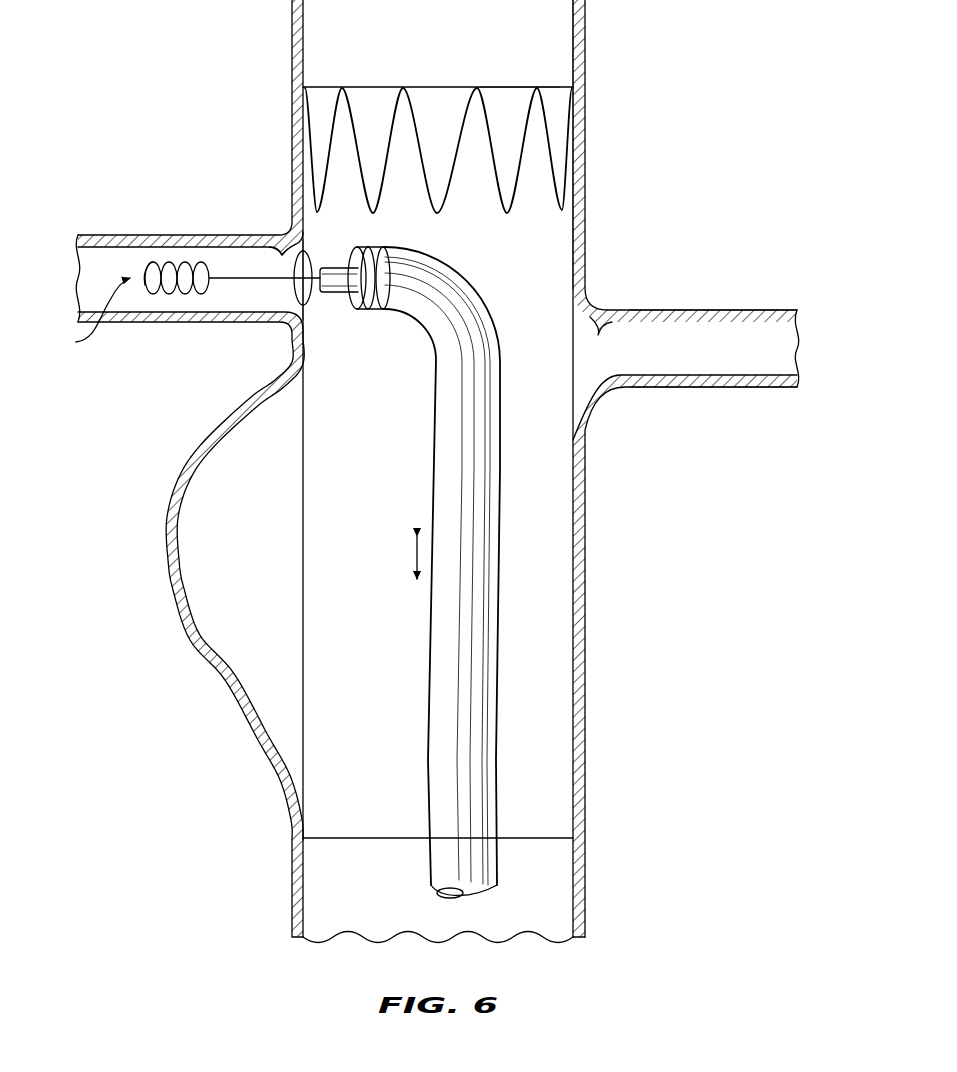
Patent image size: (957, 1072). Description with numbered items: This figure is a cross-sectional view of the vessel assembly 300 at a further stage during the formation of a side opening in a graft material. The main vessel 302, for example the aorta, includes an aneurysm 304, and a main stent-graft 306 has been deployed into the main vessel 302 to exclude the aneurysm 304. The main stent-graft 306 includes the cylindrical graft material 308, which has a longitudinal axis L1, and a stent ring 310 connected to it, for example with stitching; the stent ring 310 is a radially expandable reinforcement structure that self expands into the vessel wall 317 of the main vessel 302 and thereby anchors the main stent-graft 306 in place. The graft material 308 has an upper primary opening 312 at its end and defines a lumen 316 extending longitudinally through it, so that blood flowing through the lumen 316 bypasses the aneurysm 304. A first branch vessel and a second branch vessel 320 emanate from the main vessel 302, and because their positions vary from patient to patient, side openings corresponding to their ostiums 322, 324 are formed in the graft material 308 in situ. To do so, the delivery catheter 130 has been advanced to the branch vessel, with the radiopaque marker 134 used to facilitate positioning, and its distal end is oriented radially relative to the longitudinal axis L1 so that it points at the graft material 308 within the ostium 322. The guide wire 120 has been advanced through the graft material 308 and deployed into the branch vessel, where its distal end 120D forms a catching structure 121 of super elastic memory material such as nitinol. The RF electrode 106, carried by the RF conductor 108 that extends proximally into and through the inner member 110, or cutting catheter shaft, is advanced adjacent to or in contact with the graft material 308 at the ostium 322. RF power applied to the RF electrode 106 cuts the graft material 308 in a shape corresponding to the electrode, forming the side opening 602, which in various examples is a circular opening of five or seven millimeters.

The vessel assembly 300 is at (743, 136).
The main vessel 302 is at (410, 66).
The aneurysm 304 is at (210, 559).
The main stent-graft 306 is at (280, 469).
The graft material 308 is at (305, 442).
The stent ring 310 is at (357, 162).
The upper primary opening 312 is at (517, 74).
The lumen 316 is at (497, 250).
The vessel wall 317 is at (585, 156).
The second branch vessel 320 is at (706, 361).
The ostium 322 is at (280, 243).
The ostium 324 is at (602, 320).
The side opening 602 is at (313, 242).
The guide wire 120 is at (228, 276).
The distal end of guide wire 120D is at (76, 315).
The catching structure 121 is at (167, 295).
The RF electrode 106 is at (306, 306).
The RF conductor 108 is at (308, 298).
The inner member 110 is at (337, 272).
The radiopaque marker 134 is at (393, 257).
The delivery catheter 130 is at (486, 492).
The longitudinal axis L1 is at (411, 562).